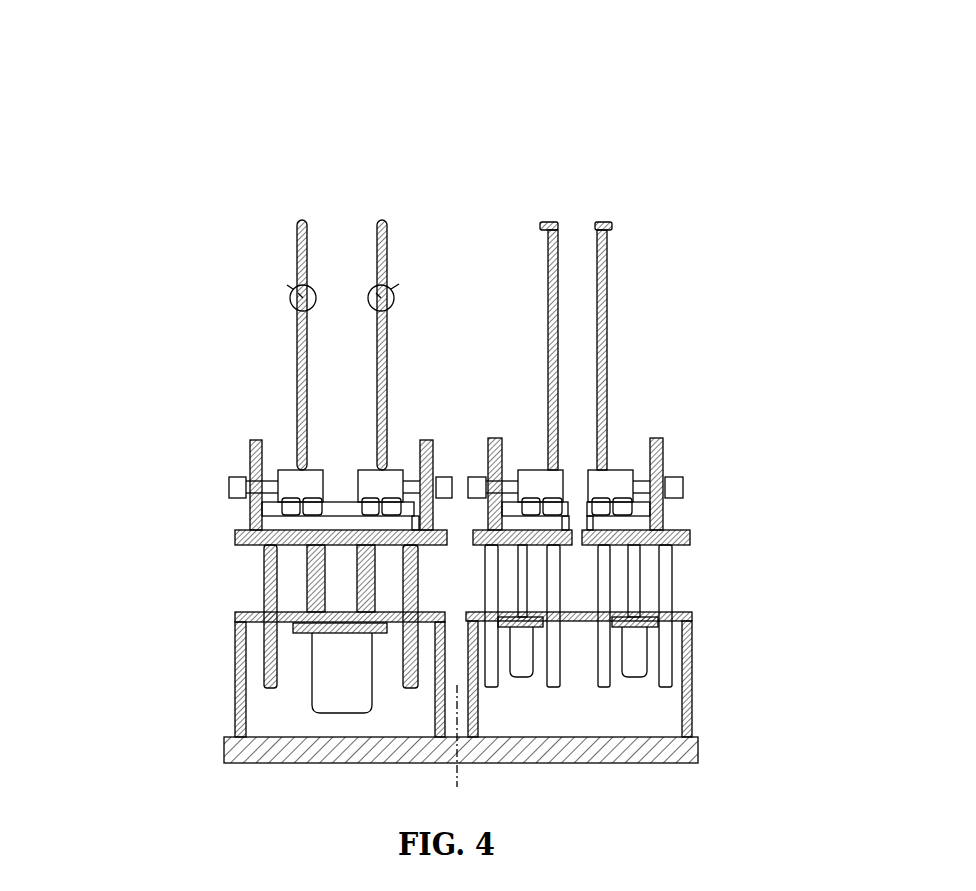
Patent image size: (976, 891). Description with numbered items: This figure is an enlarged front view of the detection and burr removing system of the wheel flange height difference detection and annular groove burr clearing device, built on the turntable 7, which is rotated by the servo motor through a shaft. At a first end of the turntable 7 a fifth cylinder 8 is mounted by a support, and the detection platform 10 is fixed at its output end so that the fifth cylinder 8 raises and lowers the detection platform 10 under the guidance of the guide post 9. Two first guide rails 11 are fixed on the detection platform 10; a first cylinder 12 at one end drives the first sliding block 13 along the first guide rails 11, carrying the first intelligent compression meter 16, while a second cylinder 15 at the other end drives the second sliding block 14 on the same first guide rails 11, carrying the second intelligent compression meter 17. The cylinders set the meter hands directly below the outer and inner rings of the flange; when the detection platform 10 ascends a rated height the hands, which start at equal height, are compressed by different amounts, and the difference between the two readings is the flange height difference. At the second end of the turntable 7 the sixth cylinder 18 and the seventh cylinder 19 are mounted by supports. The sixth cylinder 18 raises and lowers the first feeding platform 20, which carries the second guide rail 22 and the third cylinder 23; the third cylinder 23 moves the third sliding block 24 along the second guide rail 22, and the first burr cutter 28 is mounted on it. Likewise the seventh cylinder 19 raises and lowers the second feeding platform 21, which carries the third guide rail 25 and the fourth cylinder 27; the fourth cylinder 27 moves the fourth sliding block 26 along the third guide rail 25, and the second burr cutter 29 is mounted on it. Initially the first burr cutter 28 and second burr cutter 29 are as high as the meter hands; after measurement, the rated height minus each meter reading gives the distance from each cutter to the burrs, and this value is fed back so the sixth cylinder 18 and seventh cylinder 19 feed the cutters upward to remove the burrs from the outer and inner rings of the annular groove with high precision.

The turntable 7 is at (380, 710).
The fifth cylinder 8 is at (224, 629).
The guide post 9 is at (253, 620).
The detection platform 10 is at (254, 496).
The first guide rails 11 is at (170, 453).
The first cylinder 12 is at (162, 437).
The first sliding block 13 is at (192, 403).
The second sliding block 14 is at (232, 375).
The second cylinder 15 is at (257, 356).
The first intelligent compression meter 16 is at (189, 299).
The second intelligent compression meter 17 is at (230, 273).
The sixth cylinder 18 is at (735, 611).
The seventh cylinder 19 is at (678, 602).
The first feeding platform 20 is at (662, 606).
The second feeding platform 21 is at (720, 486).
The second guide rail 22 is at (725, 445).
The third cylinder 23 is at (745, 426).
The third sliding block 24 is at (723, 387).
The third guide rail 25 is at (690, 365).
The fourth sliding block 26 is at (688, 333).
The fourth cylinder 27 is at (663, 320).
The first burr cutter 28 is at (726, 266).
The second burr cutter 29 is at (699, 239).